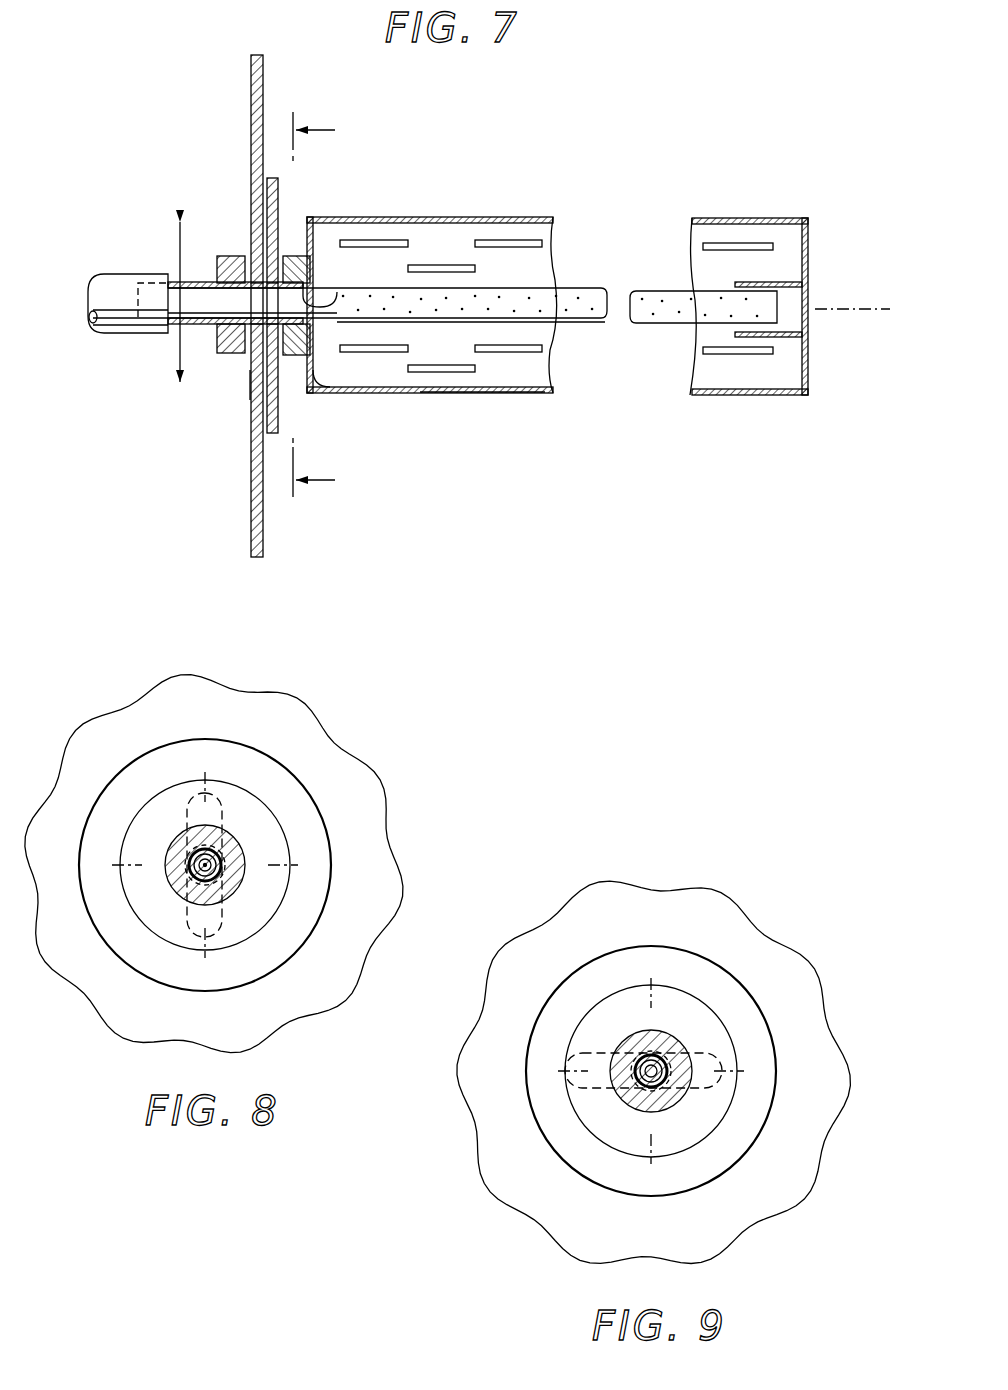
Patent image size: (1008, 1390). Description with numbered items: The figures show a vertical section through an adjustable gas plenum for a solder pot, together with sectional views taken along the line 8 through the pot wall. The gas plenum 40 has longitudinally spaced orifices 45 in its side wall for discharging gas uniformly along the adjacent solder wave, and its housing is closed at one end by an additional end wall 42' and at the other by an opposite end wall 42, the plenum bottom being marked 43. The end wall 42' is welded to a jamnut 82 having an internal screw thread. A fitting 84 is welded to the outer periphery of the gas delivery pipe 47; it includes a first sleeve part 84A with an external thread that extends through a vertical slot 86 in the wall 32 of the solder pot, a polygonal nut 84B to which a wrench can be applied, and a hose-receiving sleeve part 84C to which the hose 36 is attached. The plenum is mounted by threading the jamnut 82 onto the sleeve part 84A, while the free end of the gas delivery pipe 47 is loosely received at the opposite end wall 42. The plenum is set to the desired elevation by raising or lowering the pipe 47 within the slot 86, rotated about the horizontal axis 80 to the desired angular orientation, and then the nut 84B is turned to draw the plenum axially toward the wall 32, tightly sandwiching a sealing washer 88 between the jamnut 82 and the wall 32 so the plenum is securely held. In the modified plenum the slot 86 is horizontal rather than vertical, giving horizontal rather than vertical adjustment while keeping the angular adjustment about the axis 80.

In FIG. 7, the section line 8- 8 is at (302, 305).
In FIG. 7, the wall of the solder pot 32 is at (250, 530).
In FIG. 8, the wall of the solder pot 32 is at (87, 760).
In FIG. 9, the wall of the solder pot 32 is at (682, 908).
In FIG. 7, the hose 36 is at (108, 273).
In FIG. 7, the first gas plenum 40 is at (440, 216).
In FIG. 8, the first gas plenum 40 is at (258, 935).
In FIG. 7, the opposite end wall 42 is at (778, 304).
In FIG. 7, the additional end wall 42' is at (344, 410).
In FIG. 7, the housing bottom wall 43 is at (482, 394).
In FIG. 7, the orifices 45 is at (515, 240).
In FIG. 7, the gas delivery pipe 47 is at (592, 324).
In FIG. 8, the gas delivery pipe 47 is at (221, 880).
In FIG. 9, the gas delivery pipe 47 is at (625, 1105).
In FIG. 7, the horizontal axis 80 is at (860, 314).
In FIG. 8, the horizontal axis 80 is at (227, 867).
In FIG. 7, the jamnut 82 is at (294, 253).
In FIG. 8, the jamnut 82 is at (247, 847).
In FIG. 9, the jamnut 82 is at (673, 1100).
In FIG. 7, the fitting 84 is at (212, 252).
In FIG. 7, the first sleeve part 84A is at (334, 290).
In FIG. 7, the polygonal nut 84B is at (226, 356).
In FIG. 7, the hose-receiving sleeve part 84C is at (145, 340).
In FIG. 7, the vertical slot 86 is at (250, 386).
In FIG. 8, the vertical slot 86 is at (220, 807).
In FIG. 9, the vertical slot 86 is at (700, 1053).
In FIG. 7, the sealing washer 88 is at (280, 200).
In FIG. 8, the sealing washer 88 is at (135, 972).
In FIG. 9, the sealing washer 88 is at (630, 960).